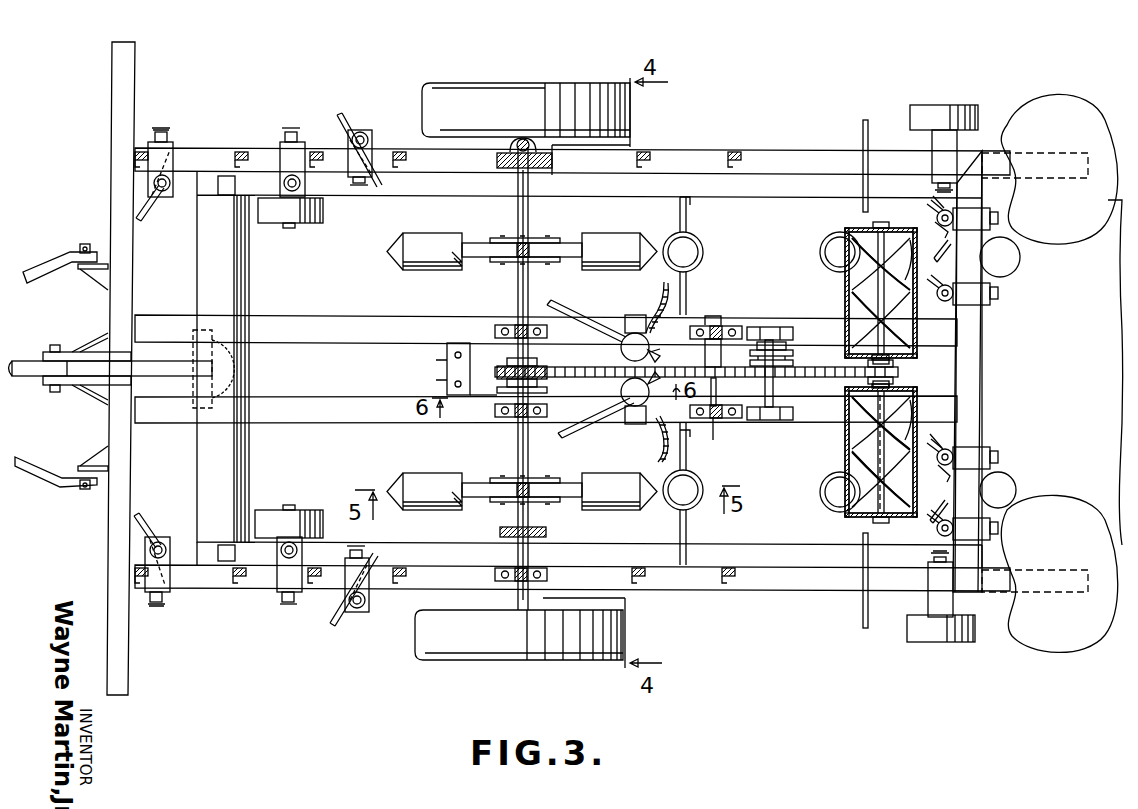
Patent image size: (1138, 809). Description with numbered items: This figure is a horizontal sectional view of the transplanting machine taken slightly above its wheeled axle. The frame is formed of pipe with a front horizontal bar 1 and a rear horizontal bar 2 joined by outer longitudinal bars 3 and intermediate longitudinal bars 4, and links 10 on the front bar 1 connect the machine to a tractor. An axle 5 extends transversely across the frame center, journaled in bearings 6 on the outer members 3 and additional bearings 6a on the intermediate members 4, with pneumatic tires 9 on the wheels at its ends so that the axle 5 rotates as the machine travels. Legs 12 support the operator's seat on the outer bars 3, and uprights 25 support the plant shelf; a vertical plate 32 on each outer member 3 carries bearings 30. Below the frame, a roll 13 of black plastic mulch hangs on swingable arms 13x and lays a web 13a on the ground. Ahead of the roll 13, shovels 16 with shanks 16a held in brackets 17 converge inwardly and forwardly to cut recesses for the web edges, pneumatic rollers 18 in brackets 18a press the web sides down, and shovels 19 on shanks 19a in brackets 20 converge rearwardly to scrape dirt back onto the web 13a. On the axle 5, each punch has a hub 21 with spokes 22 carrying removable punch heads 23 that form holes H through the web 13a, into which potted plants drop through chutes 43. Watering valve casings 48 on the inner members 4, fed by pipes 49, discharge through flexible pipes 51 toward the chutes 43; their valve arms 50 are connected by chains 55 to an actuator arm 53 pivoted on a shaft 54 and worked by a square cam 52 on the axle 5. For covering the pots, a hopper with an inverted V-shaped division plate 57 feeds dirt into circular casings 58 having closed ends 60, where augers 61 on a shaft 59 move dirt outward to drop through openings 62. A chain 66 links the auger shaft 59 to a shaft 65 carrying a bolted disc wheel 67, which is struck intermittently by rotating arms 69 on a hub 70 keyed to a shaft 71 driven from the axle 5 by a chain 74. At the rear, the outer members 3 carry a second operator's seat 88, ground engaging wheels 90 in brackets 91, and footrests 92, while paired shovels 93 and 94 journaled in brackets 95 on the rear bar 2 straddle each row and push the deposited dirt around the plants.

The front horizontal bar 1 is at (112, 105).
The rear horizontal bar 2 is at (975, 365).
The outer longitudinal bars 3 is at (422, 155).
The intermediate longitudinal bars 4 is at (372, 318).
The axle 5 is at (528, 210).
The bearings 6 is at (512, 586).
The bearings 6a is at (515, 325).
The pneumatic tires 9 is at (455, 100).
The links 10 is at (38, 270).
The legs 12 is at (135, 157).
The roll of black plastic mulch 13 is at (243, 272).
The mulch web 13a is at (1082, 326).
The swingable arms 13x is at (218, 550).
The shovels 16 is at (150, 200).
The shanks 16a is at (171, 183).
The brackets 17 is at (168, 160).
The pneumatic rollers 18 is at (310, 222).
The brackets 18a is at (280, 590).
The shovels 19 is at (370, 185).
The shanks 19a is at (370, 138).
The brackets 20 is at (352, 168).
The hub 21 is at (545, 245).
The spokes 22 is at (475, 245).
The punch heads 23 is at (608, 245).
The uprights 25 is at (318, 155).
The bearings 30 is at (522, 137).
The vertical plate 32 is at (496, 165).
The chute 43 is at (705, 248).
The watering valve casings 48 is at (634, 333).
The pipes 49 is at (582, 300).
The valve arms 50 is at (652, 348).
The flexible pipes 51 is at (672, 296).
The square cam 52 is at (500, 392).
The actuator arm 53 is at (460, 368).
The shaft 54 is at (465, 355).
The chain 55 is at (662, 352).
The division plate 57 is at (895, 378).
The circular casings 58 is at (840, 272).
The shaft 59 is at (876, 449).
The closed ends 60 is at (915, 228).
The augers 61 is at (860, 310).
The openings 62 is at (915, 270).
The shaft 65 is at (774, 385).
The chain 66 is at (800, 366).
The wheel 67 is at (785, 348).
The rotating arms 69 is at (716, 388).
The hub 70 is at (715, 338).
The shaft 71 is at (713, 420).
The chain 74 is at (603, 353).
The seat 88 is at (1078, 118).
The ground engaging wheels 90 is at (938, 105).
The brackets 91 is at (948, 142).
The footrests 92 is at (868, 135).
The shovels 93 is at (936, 200).
The shovels 94 is at (945, 250).
The brackets 95 is at (988, 228).
The holes H is at (1020, 262).